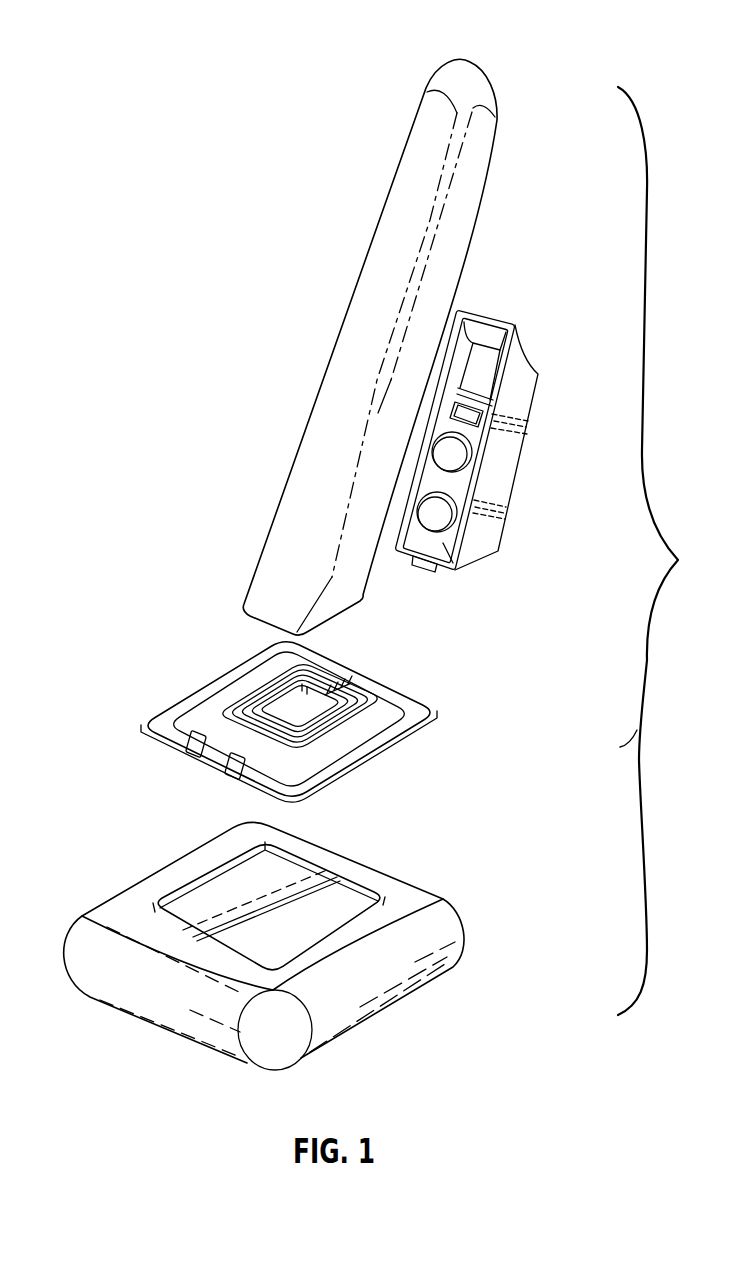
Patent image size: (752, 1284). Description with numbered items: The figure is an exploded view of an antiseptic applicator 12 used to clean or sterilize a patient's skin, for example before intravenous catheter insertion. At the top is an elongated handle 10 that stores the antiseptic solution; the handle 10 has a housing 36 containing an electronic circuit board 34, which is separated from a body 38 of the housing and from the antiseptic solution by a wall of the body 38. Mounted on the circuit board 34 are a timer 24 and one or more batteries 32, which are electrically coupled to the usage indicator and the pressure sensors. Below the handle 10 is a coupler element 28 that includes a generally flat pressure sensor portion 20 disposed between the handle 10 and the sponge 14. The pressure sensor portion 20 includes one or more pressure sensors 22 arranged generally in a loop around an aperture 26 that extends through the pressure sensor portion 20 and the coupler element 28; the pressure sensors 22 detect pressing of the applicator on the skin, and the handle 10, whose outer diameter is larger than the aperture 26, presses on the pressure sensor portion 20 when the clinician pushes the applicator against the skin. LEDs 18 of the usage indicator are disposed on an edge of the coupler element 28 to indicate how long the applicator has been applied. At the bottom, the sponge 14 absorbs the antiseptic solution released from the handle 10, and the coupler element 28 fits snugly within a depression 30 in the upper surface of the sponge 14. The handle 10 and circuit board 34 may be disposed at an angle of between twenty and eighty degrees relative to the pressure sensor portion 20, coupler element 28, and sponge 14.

The antiseptic applicator 12 is at (254, 29).
The handle 10 is at (480, 246).
The body 38 is at (397, 217).
The housing 36 is at (518, 382).
The timer 24 is at (468, 417).
The batteries 32 is at (442, 502).
The electronic circuit board 34 is at (455, 570).
The coupler element 28 is at (174, 678).
The pressure sensors 22 is at (252, 697).
The aperture 26 is at (310, 708).
The pressure sensor portion 20 is at (359, 697).
The LEDs 18 is at (188, 752).
The sponge 14 is at (441, 922).
The depression 30 is at (338, 895).